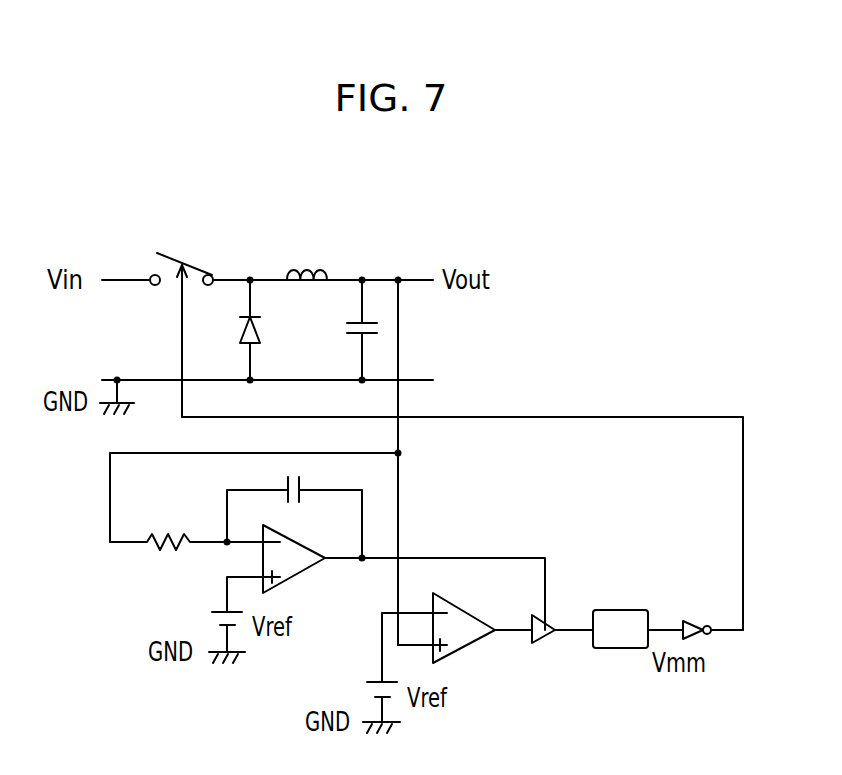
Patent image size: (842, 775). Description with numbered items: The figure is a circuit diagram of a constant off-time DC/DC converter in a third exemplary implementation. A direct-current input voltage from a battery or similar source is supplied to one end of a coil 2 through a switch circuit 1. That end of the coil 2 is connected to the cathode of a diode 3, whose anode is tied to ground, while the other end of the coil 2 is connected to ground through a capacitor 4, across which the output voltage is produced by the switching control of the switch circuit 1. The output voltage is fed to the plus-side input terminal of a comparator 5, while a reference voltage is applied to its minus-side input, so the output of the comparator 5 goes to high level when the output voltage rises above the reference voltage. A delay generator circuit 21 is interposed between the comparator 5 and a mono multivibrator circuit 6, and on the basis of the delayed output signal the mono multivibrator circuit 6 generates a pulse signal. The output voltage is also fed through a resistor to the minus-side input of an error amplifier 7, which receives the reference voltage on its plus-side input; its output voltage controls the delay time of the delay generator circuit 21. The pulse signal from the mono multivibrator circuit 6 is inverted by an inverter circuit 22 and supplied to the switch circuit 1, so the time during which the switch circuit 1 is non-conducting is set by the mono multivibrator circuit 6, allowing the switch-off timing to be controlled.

The switch circuit 1 is at (195, 268).
The coil 2 is at (320, 265).
The diode 3 is at (265, 325).
The capacitor 4 is at (350, 320).
The comparator 5 is at (465, 612).
The mono multivibrator circuit 6 is at (628, 610).
The error amplifier 7 is at (297, 547).
The delay generator circuit 21 is at (545, 643).
The inverter circuit 22 is at (692, 620).